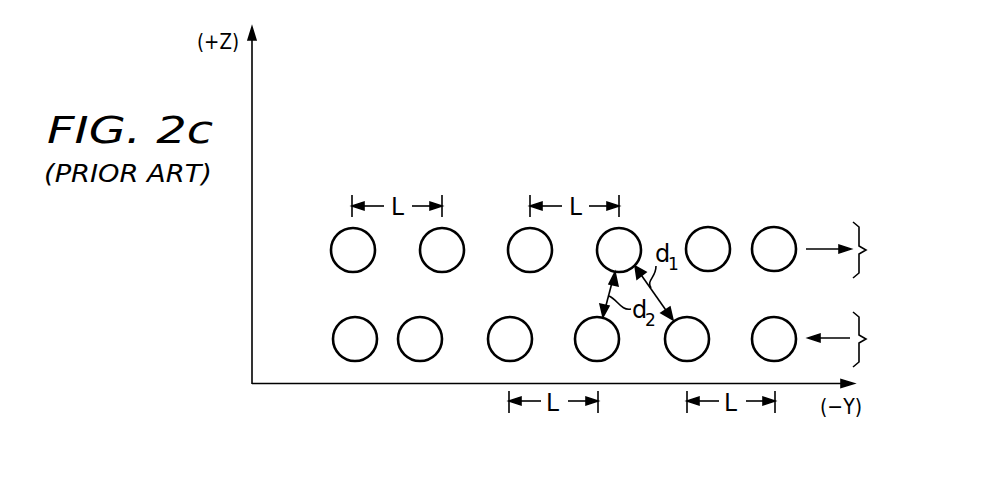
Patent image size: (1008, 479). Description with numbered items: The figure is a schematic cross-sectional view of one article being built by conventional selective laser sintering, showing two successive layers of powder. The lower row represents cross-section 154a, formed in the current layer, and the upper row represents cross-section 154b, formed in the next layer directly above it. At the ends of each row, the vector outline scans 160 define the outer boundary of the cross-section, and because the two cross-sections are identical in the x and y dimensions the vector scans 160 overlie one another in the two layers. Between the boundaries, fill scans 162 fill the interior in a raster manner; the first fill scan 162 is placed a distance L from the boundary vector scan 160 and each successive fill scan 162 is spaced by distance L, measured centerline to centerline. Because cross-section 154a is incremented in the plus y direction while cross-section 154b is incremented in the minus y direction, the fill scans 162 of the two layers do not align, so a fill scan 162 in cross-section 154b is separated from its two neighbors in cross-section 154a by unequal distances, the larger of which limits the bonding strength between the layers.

The vector outline scan 160 is at (331, 251).
The fill scan 162 is at (454, 230).
The cross-section 154a is at (866, 339).
The cross-section 154b is at (865, 250).